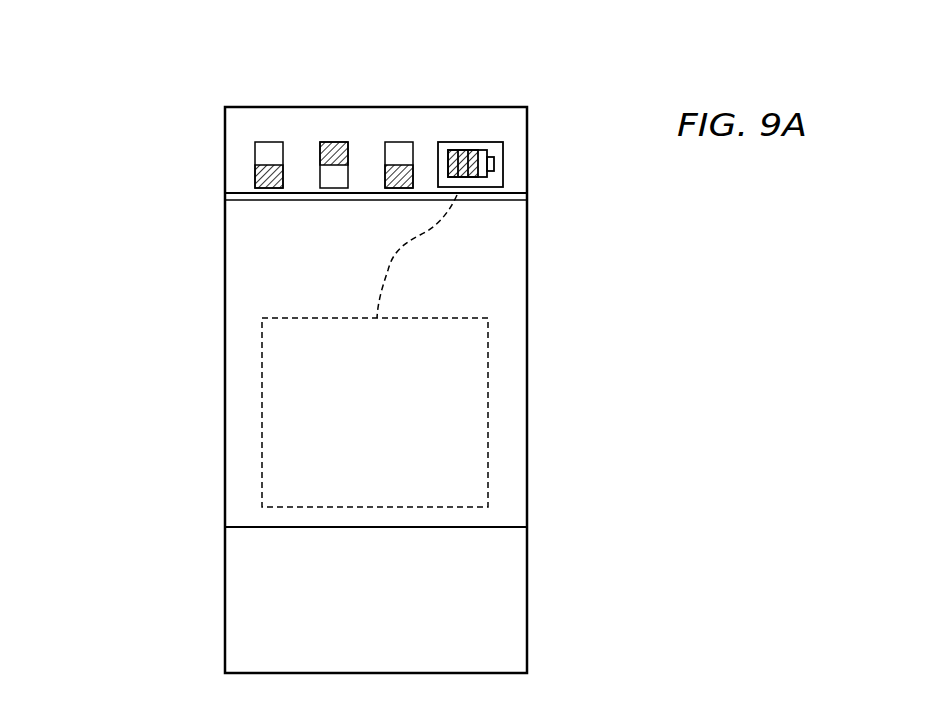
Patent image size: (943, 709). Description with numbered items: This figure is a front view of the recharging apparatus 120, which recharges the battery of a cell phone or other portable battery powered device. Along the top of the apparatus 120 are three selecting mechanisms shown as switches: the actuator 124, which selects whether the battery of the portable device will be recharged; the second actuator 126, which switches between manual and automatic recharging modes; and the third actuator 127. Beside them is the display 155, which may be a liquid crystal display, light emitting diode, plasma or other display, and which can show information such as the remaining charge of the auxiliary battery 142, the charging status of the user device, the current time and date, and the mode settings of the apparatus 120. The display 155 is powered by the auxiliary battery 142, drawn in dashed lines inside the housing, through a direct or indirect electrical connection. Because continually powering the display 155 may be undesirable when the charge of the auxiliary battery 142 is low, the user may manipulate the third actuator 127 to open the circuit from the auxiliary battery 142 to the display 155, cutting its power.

The recharging apparatus 120 is at (124, 135).
The actuator 124 is at (267, 96).
The second actuator 126 is at (332, 96).
The third actuator 127 is at (397, 96).
The auxiliary battery 142 is at (465, 442).
The display 155 is at (503, 172).